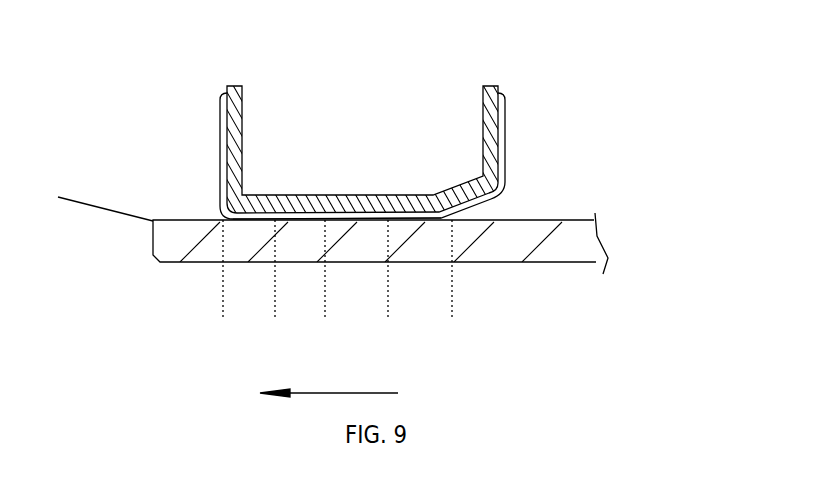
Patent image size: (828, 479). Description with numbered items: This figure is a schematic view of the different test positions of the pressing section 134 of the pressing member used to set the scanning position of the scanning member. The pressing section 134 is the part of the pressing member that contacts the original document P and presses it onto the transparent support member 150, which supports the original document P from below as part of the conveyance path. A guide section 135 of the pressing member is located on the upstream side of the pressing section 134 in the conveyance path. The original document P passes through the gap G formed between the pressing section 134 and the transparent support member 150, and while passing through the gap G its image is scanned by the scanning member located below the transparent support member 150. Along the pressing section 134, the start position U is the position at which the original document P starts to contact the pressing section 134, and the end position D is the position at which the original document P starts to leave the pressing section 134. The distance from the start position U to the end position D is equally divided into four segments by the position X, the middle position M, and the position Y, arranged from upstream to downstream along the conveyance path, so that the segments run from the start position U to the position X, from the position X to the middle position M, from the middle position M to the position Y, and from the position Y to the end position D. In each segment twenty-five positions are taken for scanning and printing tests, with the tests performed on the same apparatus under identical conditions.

The pressing section 134 is at (340, 195).
The guide section 135 is at (466, 207).
The transparent support member 150 is at (497, 243).
The original document P is at (108, 212).
The gap G is at (258, 226).
The end position D is at (227, 289).
The position Y is at (274, 289).
The middle position M is at (324, 289).
The position X is at (390, 289).
The start position U is at (457, 289).